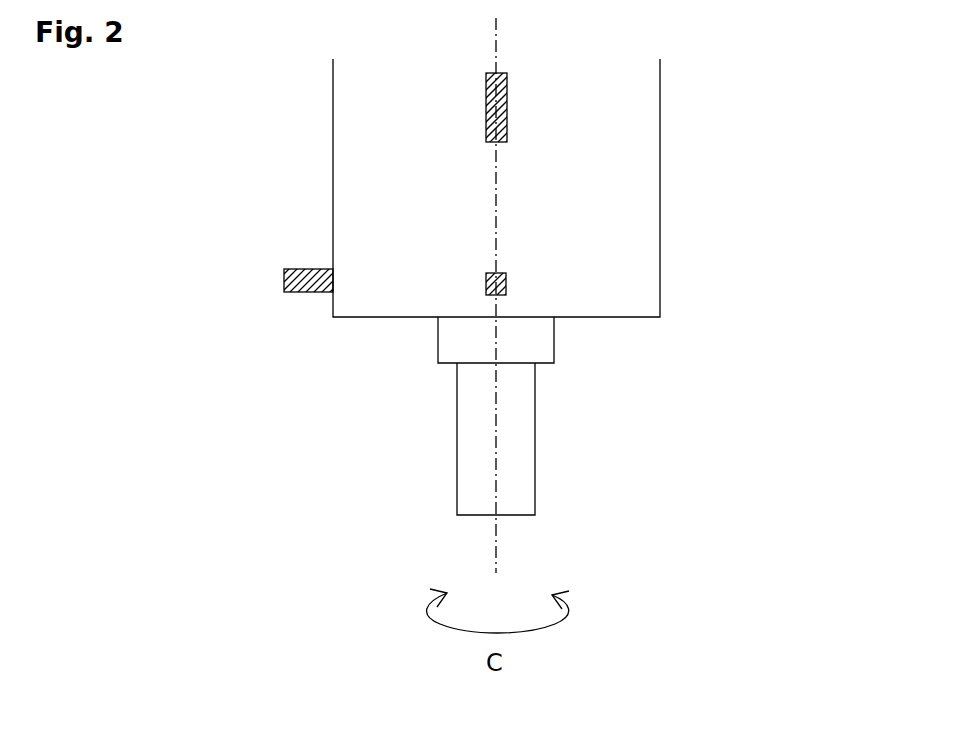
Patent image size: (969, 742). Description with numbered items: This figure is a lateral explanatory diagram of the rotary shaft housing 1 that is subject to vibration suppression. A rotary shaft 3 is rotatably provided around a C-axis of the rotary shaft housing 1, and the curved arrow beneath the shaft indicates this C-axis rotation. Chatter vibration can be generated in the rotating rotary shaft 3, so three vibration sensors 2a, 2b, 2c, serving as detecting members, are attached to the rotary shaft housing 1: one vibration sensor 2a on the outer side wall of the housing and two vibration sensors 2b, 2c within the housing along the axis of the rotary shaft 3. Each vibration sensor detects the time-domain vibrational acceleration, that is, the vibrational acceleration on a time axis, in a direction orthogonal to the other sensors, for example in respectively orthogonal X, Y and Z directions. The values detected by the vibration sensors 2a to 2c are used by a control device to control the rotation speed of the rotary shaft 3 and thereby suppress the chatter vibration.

The rotary shaft housing 1 is at (342, 165).
The vibration sensor 2a is at (287, 270).
The vibration sensor 2b is at (506, 283).
The vibration sensor 2c is at (507, 106).
The rotary shaft 3 is at (465, 464).